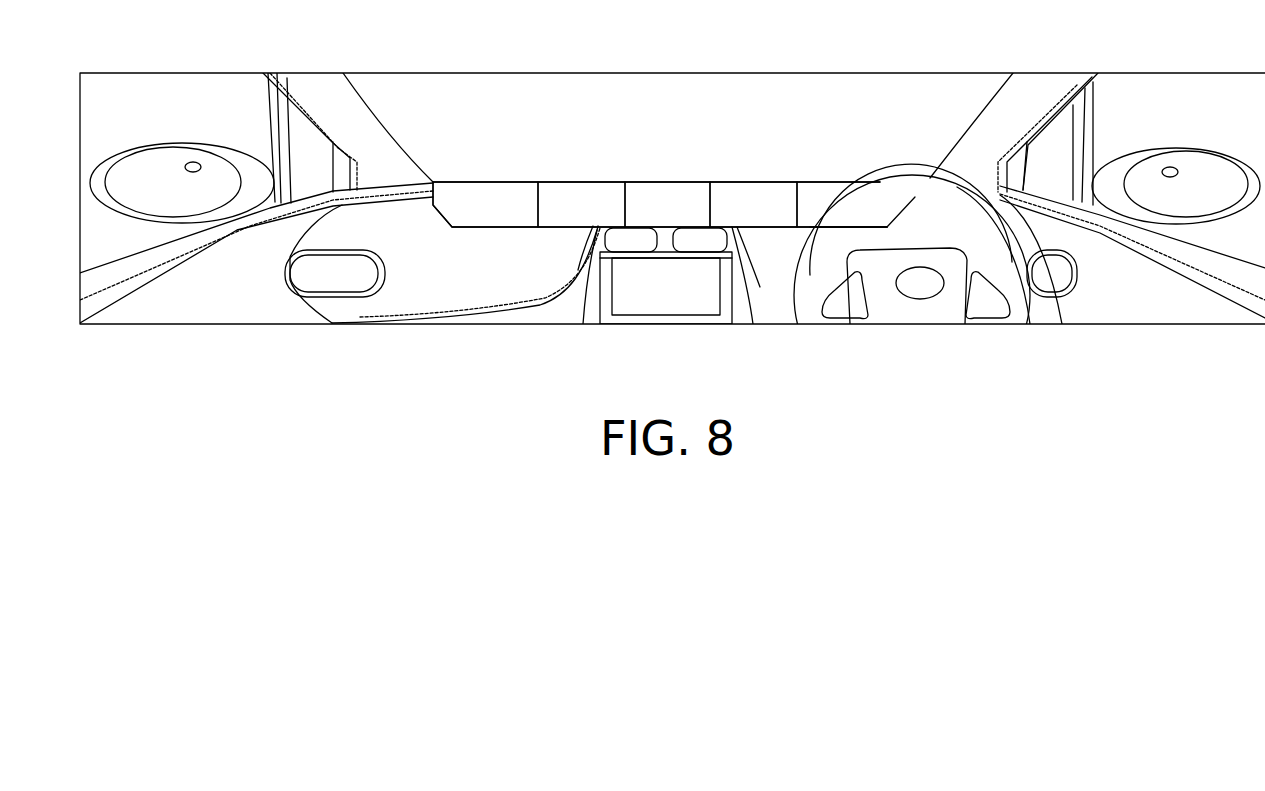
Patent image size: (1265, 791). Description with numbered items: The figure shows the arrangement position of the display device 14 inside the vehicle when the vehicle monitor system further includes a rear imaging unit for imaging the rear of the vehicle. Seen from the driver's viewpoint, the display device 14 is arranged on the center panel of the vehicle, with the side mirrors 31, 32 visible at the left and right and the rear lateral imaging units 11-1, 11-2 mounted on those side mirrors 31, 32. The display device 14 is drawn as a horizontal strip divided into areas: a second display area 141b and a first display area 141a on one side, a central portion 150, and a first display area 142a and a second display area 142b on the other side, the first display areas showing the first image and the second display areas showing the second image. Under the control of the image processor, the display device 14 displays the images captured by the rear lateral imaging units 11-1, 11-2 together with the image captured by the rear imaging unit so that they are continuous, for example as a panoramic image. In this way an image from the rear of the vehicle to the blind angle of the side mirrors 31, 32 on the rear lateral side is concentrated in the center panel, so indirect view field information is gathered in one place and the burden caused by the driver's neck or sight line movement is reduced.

The display device 14 is at (644, 150).
The first display area 141a is at (580, 187).
The second display area 141b is at (483, 187).
The center display area 150 is at (692, 183).
The first display area 142a is at (757, 187).
The second display area 142b is at (832, 187).
The side mirror 31 is at (150, 143).
The side mirror 32 is at (1212, 148).
The rear lateral imaging unit 11-1 is at (194, 161).
The rear lateral imaging unit 11-2 is at (1168, 166).